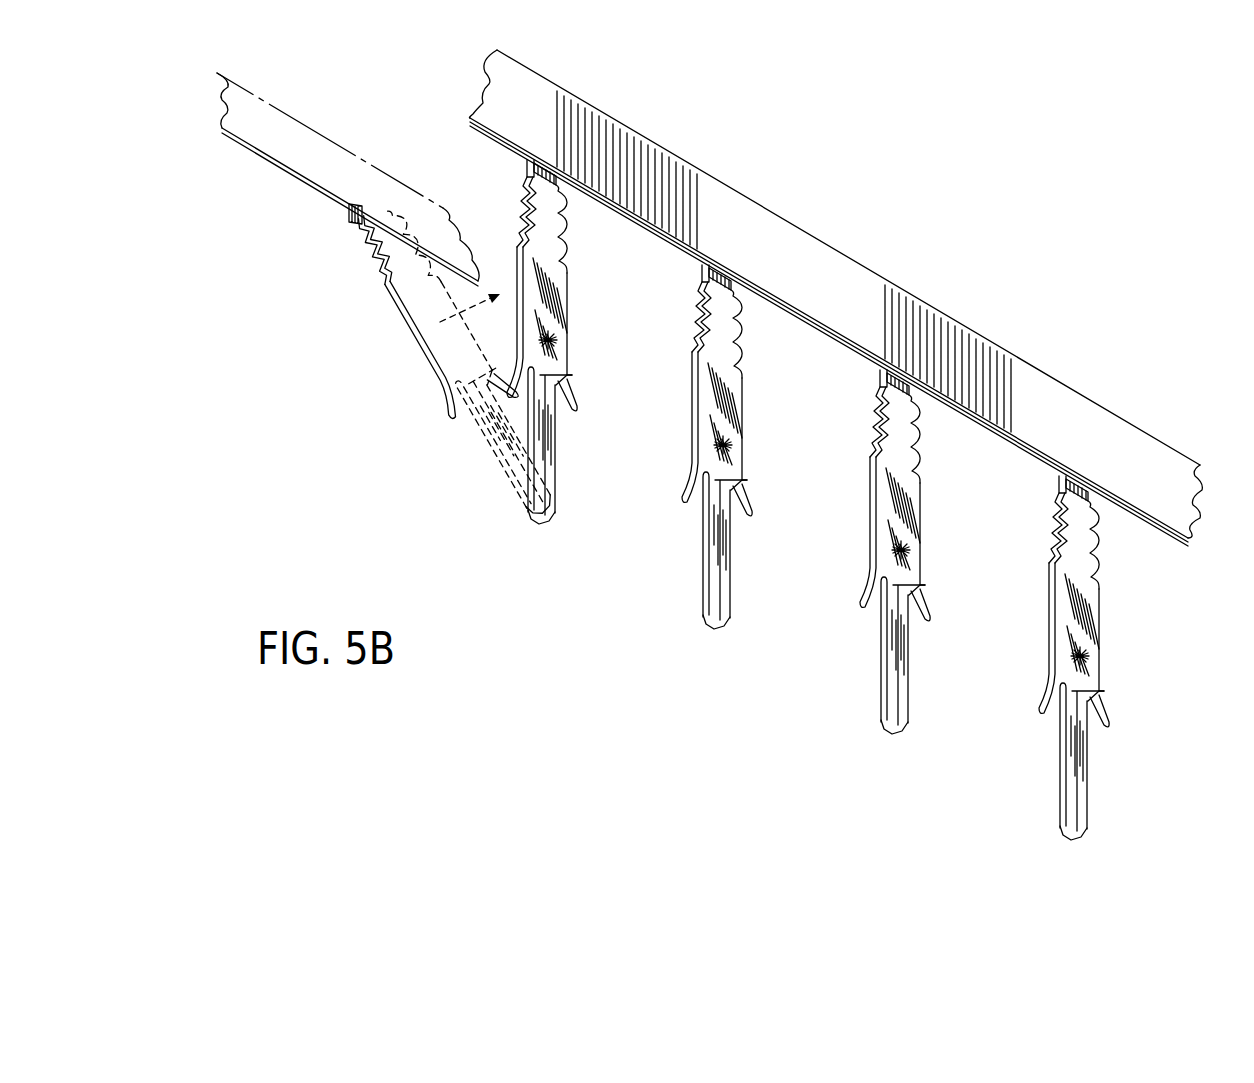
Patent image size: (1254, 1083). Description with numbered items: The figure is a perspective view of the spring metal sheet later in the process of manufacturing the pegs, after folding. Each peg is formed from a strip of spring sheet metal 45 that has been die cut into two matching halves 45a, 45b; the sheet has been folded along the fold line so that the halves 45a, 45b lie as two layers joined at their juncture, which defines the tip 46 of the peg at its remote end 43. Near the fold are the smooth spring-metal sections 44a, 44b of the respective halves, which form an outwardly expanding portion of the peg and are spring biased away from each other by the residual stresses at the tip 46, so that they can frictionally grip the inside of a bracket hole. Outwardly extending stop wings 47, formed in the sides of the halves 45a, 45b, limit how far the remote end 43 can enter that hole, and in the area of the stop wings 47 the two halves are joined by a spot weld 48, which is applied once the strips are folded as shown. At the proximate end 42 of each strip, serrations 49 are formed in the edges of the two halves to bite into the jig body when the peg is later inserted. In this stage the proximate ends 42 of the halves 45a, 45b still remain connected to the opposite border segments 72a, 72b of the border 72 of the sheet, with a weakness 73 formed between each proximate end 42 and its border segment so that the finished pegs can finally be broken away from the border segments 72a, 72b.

The proximate end 42 is at (556, 198).
The remote end 43 is at (545, 497).
The smooth spring-metal section 44a is at (518, 442).
The smooth spring-metal section 44b is at (556, 426).
The strip of spring sheet metal 45 is at (574, 297).
The first strip half 45a is at (412, 334).
The second strip half 45b is at (745, 397).
The tip 46 is at (533, 523).
The stop wings 47 is at (578, 389).
The spot weld 48 is at (560, 345).
The serrations 49 is at (522, 203).
The border 72 is at (838, 252).
The first border segment 72a is at (322, 135).
The second border segment 72b is at (1125, 420).
The weakness 73 is at (548, 164).